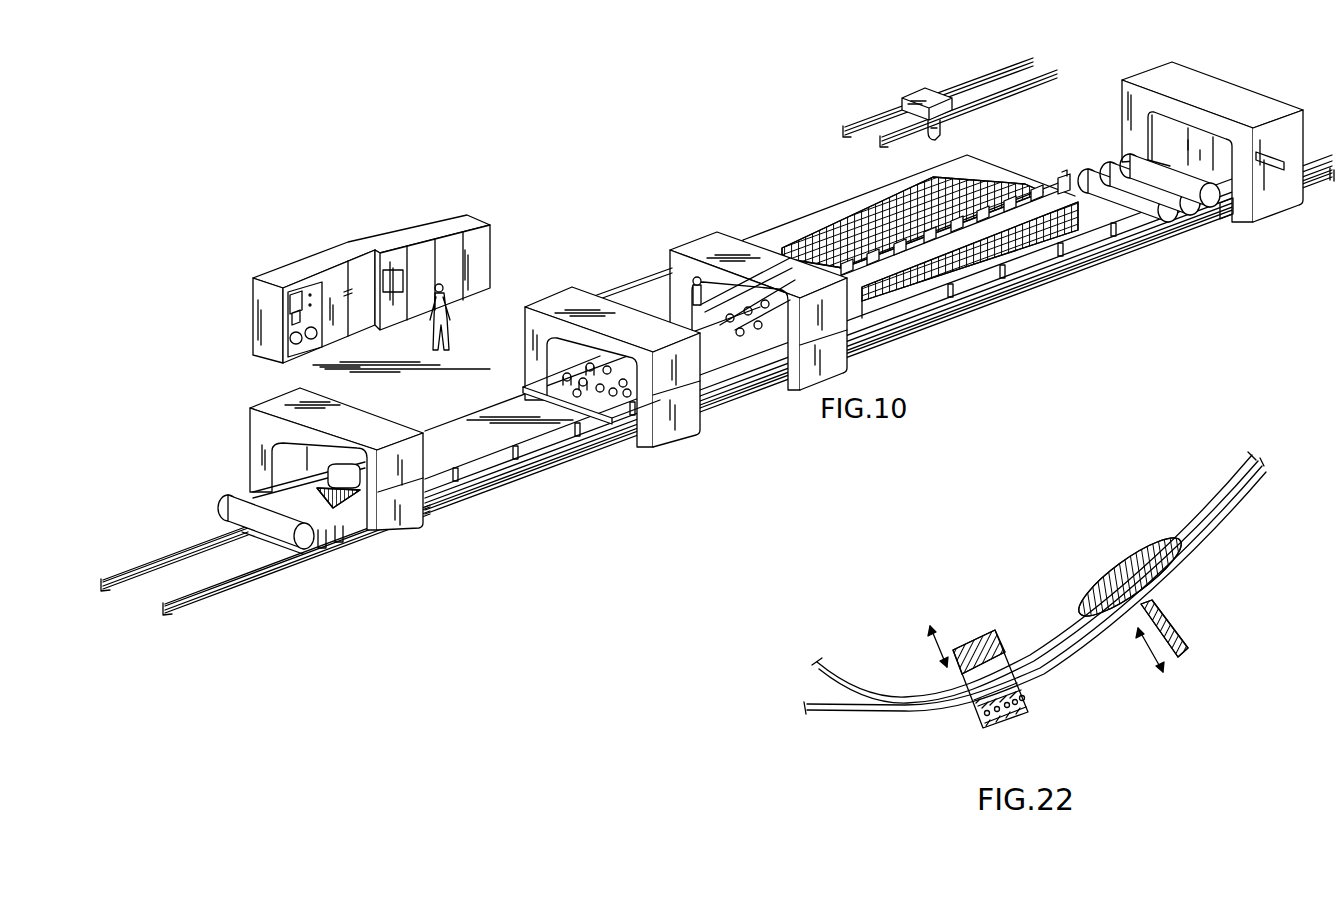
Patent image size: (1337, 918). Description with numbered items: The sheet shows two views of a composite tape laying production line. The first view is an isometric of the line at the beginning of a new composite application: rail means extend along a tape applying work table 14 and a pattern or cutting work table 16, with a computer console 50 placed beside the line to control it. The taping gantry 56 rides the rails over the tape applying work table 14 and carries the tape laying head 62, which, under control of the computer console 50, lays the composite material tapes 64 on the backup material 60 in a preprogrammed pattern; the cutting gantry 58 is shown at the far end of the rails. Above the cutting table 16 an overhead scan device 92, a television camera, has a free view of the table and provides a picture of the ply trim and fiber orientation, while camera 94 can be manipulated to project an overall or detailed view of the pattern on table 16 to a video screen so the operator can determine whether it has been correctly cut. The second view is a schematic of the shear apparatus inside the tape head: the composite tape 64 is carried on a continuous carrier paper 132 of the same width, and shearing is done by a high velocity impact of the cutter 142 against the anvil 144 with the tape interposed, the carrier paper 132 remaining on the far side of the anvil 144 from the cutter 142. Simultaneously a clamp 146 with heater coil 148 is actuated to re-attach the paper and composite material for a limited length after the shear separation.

In FIG. 10, the tape applying work table 14 is at (495, 465).
In FIG. 10, the pattern or cutting work table 16 is at (1092, 240).
In FIG. 10, the computer console 50 is at (368, 243).
In FIG. 10, the taping gantry 56 is at (397, 425).
In FIG. 10, the cutting gantry 58 is at (1238, 84).
In FIG. 10, the material 60 is at (905, 300).
In FIG. 10, the tape laying head 62 is at (340, 466).
In FIG. 10, the composite material tapes 64 is at (1008, 255).
In FIG. 22, the composite material tapes 64 is at (1190, 538).
In FIG. 10, the overhead scan device 92 is at (918, 84).
In FIG. 10, the camera 94 is at (940, 128).
In FIG. 22, the carrier paper 132 is at (900, 694).
In FIG. 22, the cutter 142 is at (1188, 638).
In FIG. 22, the anvil 144 is at (1113, 580).
In FIG. 22, the clamp 146 is at (1005, 626).
In FIG. 22, the heater coil 148 is at (975, 726).